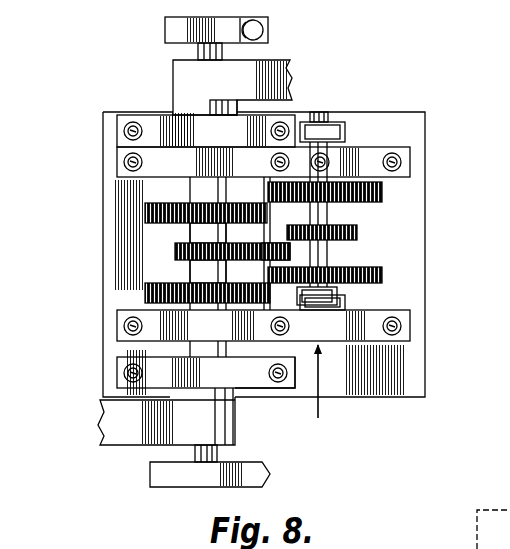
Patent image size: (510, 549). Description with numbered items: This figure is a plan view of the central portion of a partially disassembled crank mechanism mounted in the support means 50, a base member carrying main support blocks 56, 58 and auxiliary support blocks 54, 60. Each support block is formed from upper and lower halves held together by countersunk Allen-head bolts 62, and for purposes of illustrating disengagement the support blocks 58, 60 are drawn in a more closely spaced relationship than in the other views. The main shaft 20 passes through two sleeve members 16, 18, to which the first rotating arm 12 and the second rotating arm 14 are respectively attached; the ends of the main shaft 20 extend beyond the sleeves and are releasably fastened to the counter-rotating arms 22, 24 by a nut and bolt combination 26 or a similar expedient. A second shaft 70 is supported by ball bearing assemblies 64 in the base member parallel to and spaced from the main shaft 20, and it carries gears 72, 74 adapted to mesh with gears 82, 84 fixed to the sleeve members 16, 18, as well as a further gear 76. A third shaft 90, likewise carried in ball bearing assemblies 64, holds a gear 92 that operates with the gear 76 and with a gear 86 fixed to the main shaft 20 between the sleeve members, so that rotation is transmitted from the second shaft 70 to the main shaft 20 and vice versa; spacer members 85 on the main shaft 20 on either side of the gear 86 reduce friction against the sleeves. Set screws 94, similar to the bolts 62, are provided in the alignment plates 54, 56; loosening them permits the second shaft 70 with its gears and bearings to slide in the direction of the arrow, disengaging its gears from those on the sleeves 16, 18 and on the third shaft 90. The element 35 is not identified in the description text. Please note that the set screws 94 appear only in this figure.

The first rotating arm 12 is at (98, 425).
The second rotating arm 14 is at (292, 75).
The sleeve member 16 is at (195, 348).
The sleeve member 18 is at (190, 188).
The main shaft 20 is at (198, 52).
The counter-rotating arm 22 is at (270, 474).
The counter-rotating arm 24 is at (165, 27).
The nut and bolt combination 26 is at (265, 32).
The adjacent element 35 is at (477, 535).
The support means 50 is at (425, 390).
The auxiliary support block 54 is at (248, 383).
The main support block 56 is at (410, 335).
The main support block 58 is at (410, 160).
The auxiliary support block 60 is at (117, 132).
The countersunk Allen-head bolt 62 is at (125, 128).
The ball bearing assembly 64 is at (340, 128).
The second shaft 70 is at (318, 112).
The gear 72 is at (337, 298).
The gear 74 is at (382, 195).
The gear 76 is at (292, 252).
The gear 82 is at (145, 294).
The gear 84 is at (145, 212).
The spacer member 85 is at (140, 232).
The gear 86 is at (175, 254).
The third shaft 90 is at (357, 233).
The gear 92 is at (382, 275).
The set screw 94 is at (320, 163).